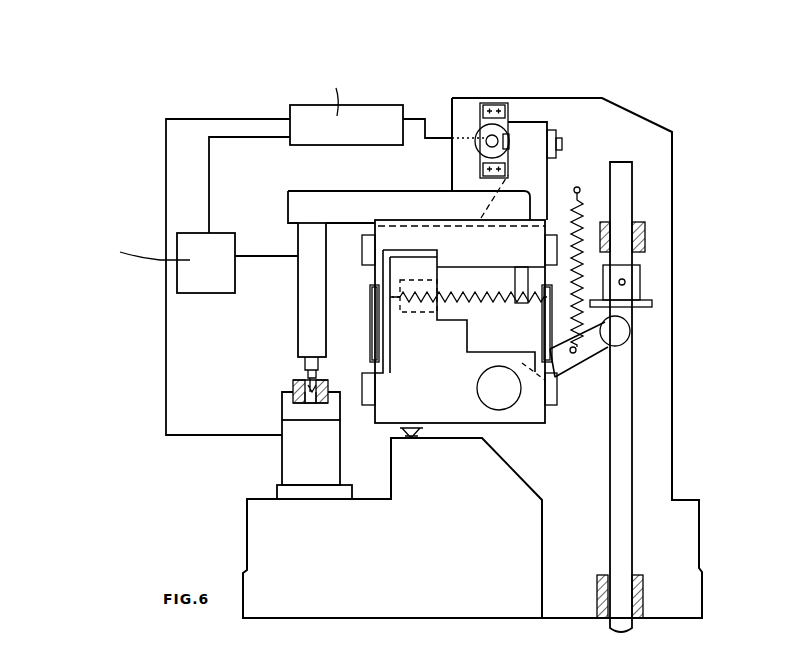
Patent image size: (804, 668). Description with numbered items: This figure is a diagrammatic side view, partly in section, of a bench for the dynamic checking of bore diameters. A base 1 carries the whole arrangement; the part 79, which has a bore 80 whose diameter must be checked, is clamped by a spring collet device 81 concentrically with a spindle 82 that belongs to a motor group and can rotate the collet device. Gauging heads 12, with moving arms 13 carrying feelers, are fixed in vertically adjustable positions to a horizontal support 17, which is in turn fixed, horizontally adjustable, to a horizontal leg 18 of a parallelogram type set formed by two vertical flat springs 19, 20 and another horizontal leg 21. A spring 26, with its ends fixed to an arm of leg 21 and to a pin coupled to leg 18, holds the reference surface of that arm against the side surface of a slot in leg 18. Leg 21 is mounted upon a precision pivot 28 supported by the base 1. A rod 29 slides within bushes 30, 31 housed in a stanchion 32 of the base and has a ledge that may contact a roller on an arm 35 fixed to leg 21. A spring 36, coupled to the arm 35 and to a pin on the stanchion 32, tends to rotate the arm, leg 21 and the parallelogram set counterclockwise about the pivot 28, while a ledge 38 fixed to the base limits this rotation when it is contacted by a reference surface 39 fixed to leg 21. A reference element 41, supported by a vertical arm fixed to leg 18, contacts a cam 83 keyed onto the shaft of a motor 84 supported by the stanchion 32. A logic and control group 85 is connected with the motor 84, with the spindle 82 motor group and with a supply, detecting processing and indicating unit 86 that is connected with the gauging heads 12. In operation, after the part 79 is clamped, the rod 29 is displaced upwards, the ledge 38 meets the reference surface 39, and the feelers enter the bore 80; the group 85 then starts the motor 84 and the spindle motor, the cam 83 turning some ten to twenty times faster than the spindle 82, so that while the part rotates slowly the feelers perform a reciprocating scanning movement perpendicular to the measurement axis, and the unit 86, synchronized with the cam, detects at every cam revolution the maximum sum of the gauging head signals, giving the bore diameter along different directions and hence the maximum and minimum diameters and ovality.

The base 1 is at (316, 606).
The gauging head 12 is at (316, 289).
The moving arm 13 is at (304, 376).
The horizontal support 17 is at (306, 203).
The horizontal leg 18 is at (397, 243).
The vertical flat spring 19 is at (372, 276).
The vertical flat spring 20 is at (547, 275).
The horizontal leg 21 is at (545, 413).
The spring 26 is at (470, 297).
The precision pivot 28 is at (505, 395).
The rod 29 is at (623, 192).
The bush 30 is at (646, 235).
The bush 31 is at (643, 605).
The stanchion 32 is at (662, 342).
The arm 35 is at (590, 355).
The spring 36 is at (577, 208).
The ledge 38 is at (395, 440).
The reference surface 39 is at (400, 432).
The reference element 41 is at (508, 127).
The part 79 is at (293, 384).
The bore 80 is at (322, 385).
The spring collet device 81 is at (290, 406).
The spindle 82 is at (298, 465).
The cam 83 is at (492, 138).
The motor 84 is at (481, 128).
The logic and control group 85 is at (332, 134).
The supply, detecting processing and indicating unit 86 is at (207, 293).